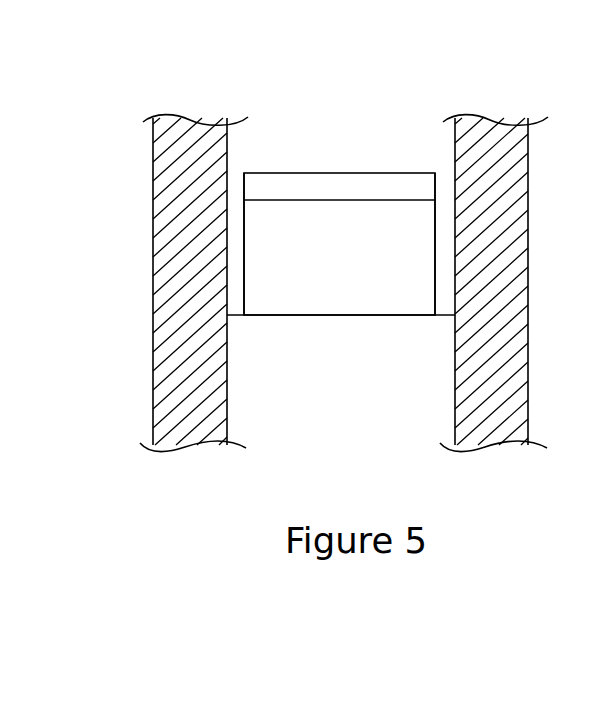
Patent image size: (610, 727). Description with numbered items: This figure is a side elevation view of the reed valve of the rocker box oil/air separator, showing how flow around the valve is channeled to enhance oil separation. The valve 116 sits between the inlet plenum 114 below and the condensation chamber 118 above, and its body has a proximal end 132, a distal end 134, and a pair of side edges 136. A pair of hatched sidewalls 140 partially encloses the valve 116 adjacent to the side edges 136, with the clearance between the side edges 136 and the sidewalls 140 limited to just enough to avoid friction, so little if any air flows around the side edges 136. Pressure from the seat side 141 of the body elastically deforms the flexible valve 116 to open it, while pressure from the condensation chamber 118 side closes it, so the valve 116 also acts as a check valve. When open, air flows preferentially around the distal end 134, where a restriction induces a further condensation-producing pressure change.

The inlet plenum 114 is at (358, 418).
The valve 116 is at (358, 273).
The condensation chamber 118 is at (360, 129).
The proximal end 132 is at (397, 317).
The distal end 134 is at (402, 173).
The side edges 136 is at (245, 225).
The sidewalls 140 is at (153, 272).
The seat side 141 is at (275, 287).